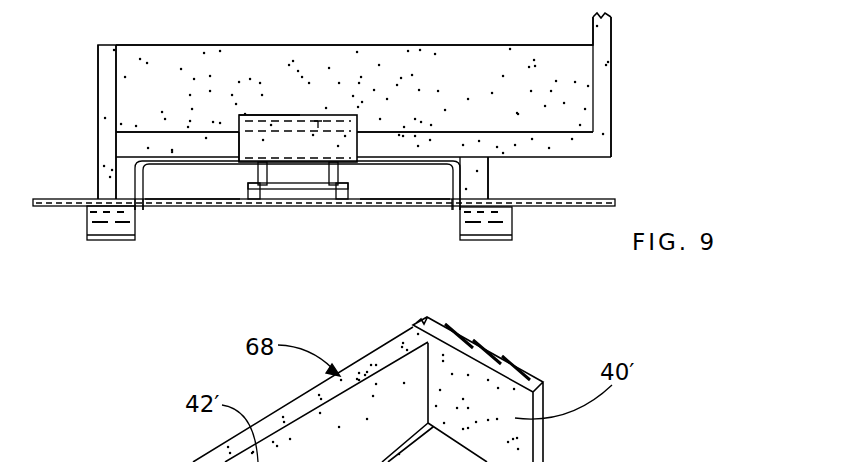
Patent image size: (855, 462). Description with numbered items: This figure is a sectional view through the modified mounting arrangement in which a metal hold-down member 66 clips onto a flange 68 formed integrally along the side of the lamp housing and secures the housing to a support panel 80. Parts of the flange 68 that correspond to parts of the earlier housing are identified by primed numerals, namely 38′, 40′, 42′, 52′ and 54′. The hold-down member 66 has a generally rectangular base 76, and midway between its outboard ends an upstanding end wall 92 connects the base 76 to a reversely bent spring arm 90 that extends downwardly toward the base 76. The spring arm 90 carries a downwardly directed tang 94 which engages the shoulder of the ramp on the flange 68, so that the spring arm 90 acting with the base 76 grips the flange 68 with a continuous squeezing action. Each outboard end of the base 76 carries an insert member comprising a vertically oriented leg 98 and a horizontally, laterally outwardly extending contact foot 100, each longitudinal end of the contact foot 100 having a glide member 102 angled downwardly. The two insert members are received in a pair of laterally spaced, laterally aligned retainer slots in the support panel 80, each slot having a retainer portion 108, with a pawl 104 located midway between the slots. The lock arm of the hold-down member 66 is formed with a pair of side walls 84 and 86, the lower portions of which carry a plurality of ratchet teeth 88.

The flange 68 is at (98, 75).
The left side wall 38′ is at (98, 118).
The left support leg 54′ is at (98, 183).
The back wall 42′ is at (438, 72).
The right side wall 40′ is at (612, 110).
The right support leg 52′ is at (493, 185).
The spring arm 90 is at (340, 113).
The hold-down member 66 is at (290, 115).
The tang 94 is at (247, 112).
The upstanding end wall 92 is at (239, 147).
The base 76 is at (382, 160).
The support panel 80 is at (575, 200).
The contact foot 100 is at (87, 238).
The glide member 102 is at (112, 232).
The leg 98 is at (166, 206).
The retainer portion 108 is at (172, 208).
The side wall 84 is at (258, 168).
The side wall 86 is at (342, 168).
The pawl 104 is at (292, 192).
The ratchet teeth 88 is at (258, 201).